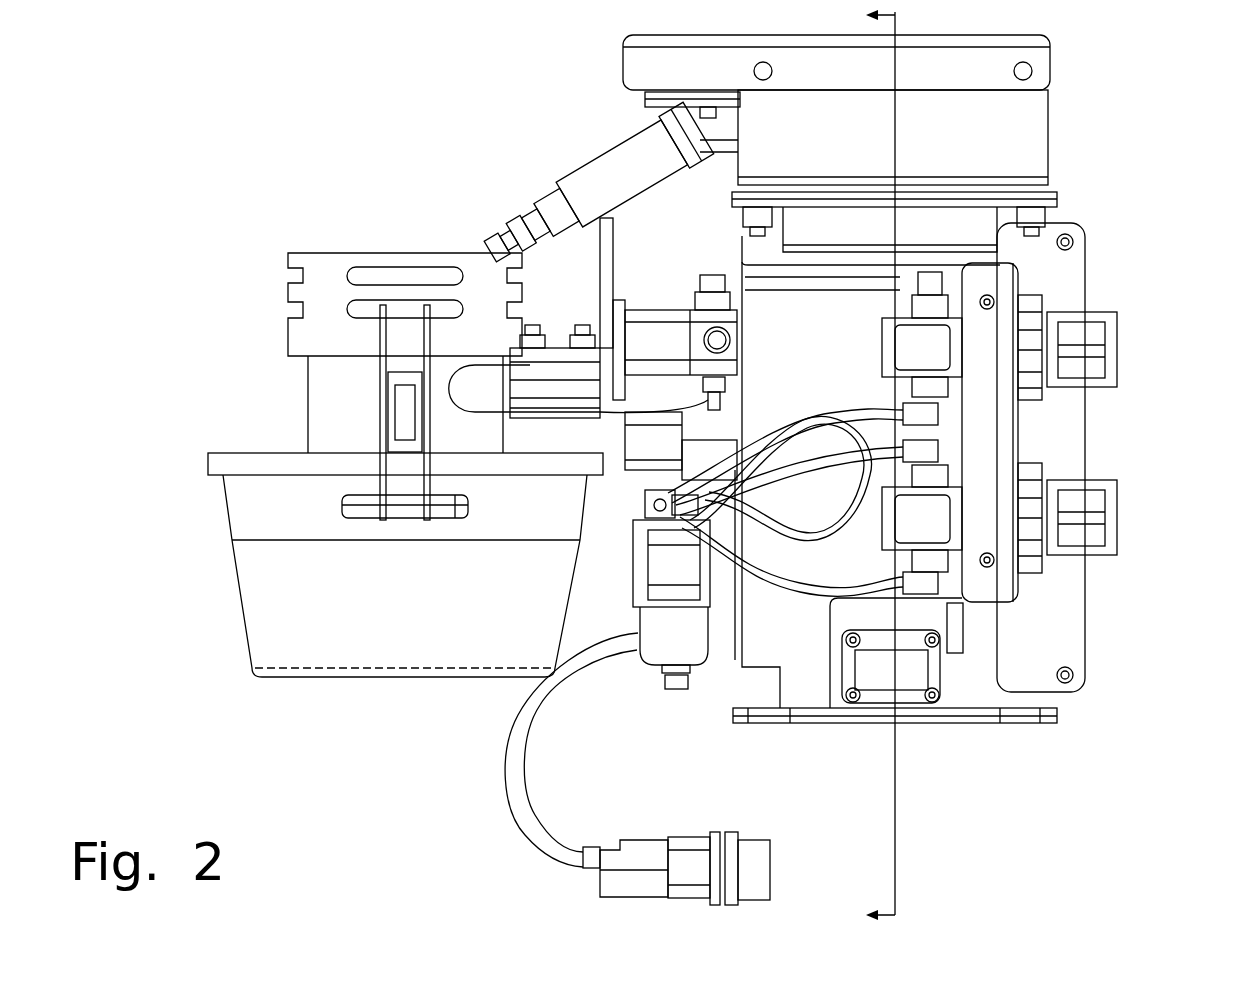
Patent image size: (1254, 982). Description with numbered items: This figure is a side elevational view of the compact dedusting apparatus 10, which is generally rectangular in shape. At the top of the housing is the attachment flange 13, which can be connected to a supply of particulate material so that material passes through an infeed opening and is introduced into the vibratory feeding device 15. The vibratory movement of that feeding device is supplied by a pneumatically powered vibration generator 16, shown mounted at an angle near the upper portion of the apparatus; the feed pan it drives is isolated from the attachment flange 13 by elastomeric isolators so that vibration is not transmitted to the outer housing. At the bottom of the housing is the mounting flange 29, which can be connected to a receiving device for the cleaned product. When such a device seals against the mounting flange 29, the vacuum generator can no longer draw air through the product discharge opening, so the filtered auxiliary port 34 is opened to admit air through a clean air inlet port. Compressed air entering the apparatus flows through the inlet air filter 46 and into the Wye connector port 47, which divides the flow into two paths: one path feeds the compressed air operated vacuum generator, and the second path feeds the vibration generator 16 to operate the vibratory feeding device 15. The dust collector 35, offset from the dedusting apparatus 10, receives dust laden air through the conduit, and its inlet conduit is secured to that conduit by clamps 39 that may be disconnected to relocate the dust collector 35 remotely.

The dedusting apparatus 10 is at (248, 138).
The attachment flange 13 is at (1052, 56).
The vibratory feeding device 15 is at (1080, 138).
The pneumatically powered vibration generator 16 is at (600, 170).
The mounting flange 29 is at (1050, 722).
The filtered auxiliary port 34 is at (875, 693).
The dust collector 35 is at (320, 652).
The clamps 39 is at (530, 366).
The inlet air filter 46 is at (670, 633).
The Wye connector port 47 is at (640, 515).